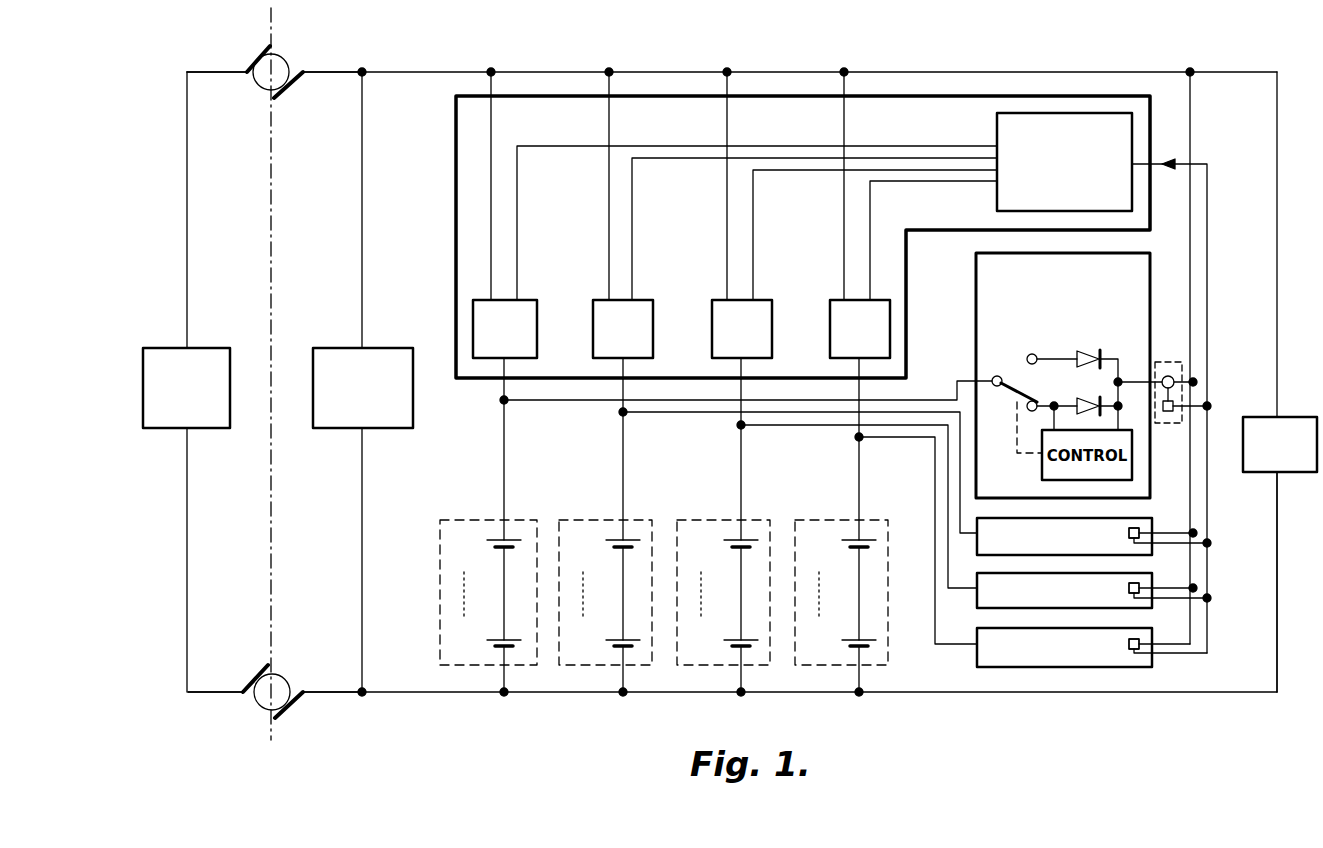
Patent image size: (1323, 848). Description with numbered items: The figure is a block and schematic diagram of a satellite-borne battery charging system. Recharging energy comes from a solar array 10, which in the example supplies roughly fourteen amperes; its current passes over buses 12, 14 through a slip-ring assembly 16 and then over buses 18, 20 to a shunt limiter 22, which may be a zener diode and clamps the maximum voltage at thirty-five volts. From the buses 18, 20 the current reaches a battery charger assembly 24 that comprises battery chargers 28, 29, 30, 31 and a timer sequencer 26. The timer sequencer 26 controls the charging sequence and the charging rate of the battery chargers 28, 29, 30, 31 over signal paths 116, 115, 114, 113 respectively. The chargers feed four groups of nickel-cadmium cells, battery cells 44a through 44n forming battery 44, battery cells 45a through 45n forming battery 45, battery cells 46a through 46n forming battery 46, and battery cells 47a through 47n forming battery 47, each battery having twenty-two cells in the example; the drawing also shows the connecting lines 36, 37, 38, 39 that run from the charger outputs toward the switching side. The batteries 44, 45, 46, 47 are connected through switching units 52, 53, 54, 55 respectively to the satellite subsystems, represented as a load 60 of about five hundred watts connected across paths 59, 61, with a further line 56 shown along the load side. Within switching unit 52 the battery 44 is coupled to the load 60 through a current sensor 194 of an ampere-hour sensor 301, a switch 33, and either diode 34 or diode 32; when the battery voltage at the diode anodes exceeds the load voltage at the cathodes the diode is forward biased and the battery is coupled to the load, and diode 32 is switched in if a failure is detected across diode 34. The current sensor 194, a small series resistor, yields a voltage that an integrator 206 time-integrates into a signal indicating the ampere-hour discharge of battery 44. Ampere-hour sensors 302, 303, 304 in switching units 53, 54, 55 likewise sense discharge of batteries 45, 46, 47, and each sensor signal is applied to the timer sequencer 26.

The solar array 10 is at (204, 347).
The bus 12 is at (219, 66).
The bus 14 is at (223, 700).
The slip-ring assembly 16 is at (277, 64).
The bus 18 is at (324, 58).
The bus 20 is at (322, 700).
The shunt limiter 22 is at (383, 347).
The battery charger assembly 24 is at (1150, 117).
The timer sequencer 26 is at (987, 133).
The battery charger 28 is at (523, 298).
The battery charger 29 is at (640, 298).
The battery charger 30 is at (759, 298).
The battery charger 31 is at (840, 298).
The diode 32 is at (1078, 346).
The switch 33 is at (1012, 372).
The diode 34 is at (1080, 396).
The battery line 36 is at (528, 404).
The battery line 37 is at (648, 416).
The battery line 38 is at (766, 429).
The battery line 39 is at (882, 441).
The battery 44 is at (486, 548).
The battery cell 44a is at (491, 542).
The battery cell 44n is at (491, 639).
The battery 45 is at (604, 554).
The battery cell 45a is at (610, 542).
The battery cell 45n is at (610, 639).
The battery 46 is at (722, 560).
The battery cell 46a is at (728, 542).
The battery cell 46n is at (728, 639).
The battery 47 is at (840, 566).
The battery cell 47a is at (846, 542).
The battery cell 47n is at (846, 639).
The switching unit 52 is at (968, 290).
The switching unit 53 is at (1134, 533).
The switching unit 54 is at (1134, 588).
The switching unit 55 is at (1134, 644).
The load bus line 56 is at (1193, 150).
The path 59 is at (1268, 246).
The load 60 is at (1262, 416).
The path 61 is at (1276, 624).
The signal path 113 is at (884, 185).
The signal path 114 is at (766, 174).
The signal path 115 is at (648, 162).
The signal path 116 is at (530, 150).
The current sensor 194 is at (1170, 376).
The integrator 206 is at (1168, 412).
The ampere-hour sensor 301 is at (1156, 362).
The ampere-hour sensor 302 is at (1150, 530).
The ampere-hour sensor 303 is at (1150, 586).
The ampere-hour sensor 304 is at (1150, 642).